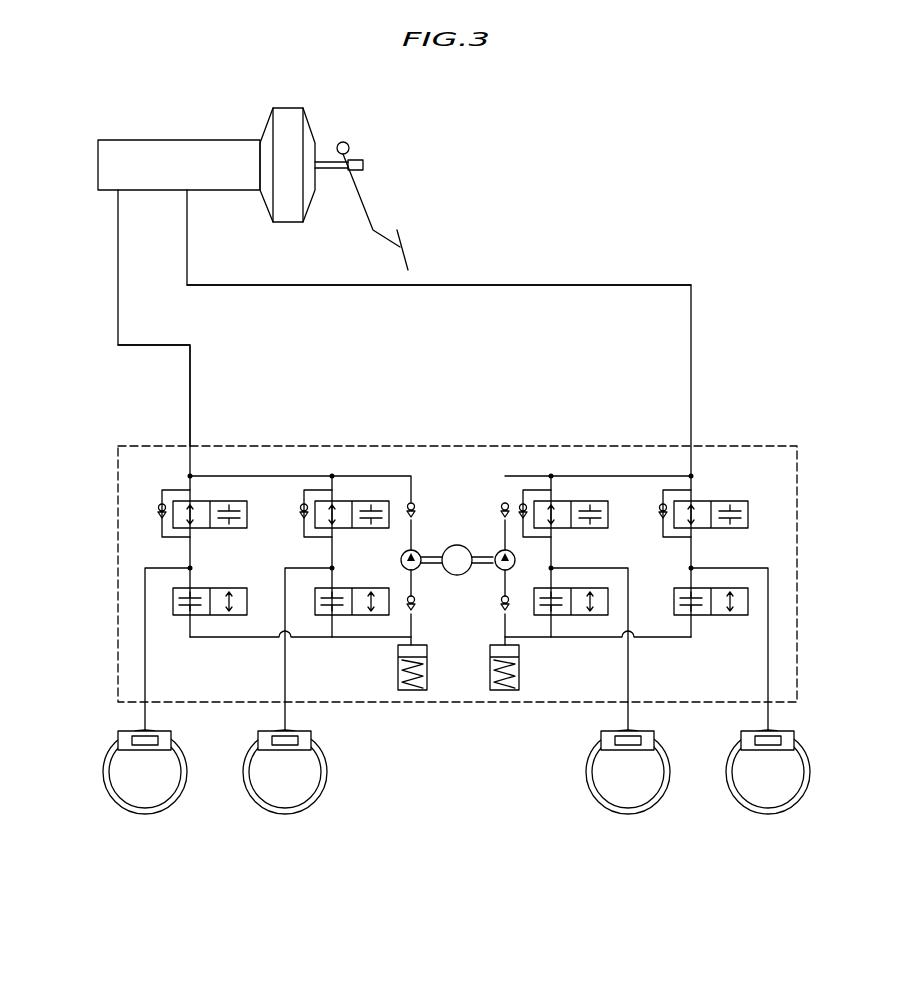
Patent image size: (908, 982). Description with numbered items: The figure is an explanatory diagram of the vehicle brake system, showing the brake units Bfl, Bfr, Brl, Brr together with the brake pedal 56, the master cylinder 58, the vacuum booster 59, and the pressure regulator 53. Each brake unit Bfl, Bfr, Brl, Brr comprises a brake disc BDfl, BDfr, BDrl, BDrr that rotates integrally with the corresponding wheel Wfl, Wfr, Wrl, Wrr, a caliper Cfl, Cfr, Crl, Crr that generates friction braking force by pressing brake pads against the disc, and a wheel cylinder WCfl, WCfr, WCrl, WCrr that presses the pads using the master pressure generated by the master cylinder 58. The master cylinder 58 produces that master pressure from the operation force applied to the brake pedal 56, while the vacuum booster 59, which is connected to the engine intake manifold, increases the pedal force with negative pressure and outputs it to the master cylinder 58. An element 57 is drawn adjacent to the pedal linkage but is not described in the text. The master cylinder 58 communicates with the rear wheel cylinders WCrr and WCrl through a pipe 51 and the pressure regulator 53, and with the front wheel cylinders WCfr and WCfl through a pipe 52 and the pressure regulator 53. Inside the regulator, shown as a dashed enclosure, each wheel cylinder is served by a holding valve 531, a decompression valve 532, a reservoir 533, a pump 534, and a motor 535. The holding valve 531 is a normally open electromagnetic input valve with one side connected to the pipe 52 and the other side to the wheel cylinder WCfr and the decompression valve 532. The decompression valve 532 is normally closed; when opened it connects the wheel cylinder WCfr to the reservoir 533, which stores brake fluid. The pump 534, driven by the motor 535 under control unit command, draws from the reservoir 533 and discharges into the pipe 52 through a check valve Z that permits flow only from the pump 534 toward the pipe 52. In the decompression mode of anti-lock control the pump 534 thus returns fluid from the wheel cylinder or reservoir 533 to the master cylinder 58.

The pipe 51 is at (529, 285).
The pipe 52 is at (190, 365).
The pressure regulator 53 is at (557, 444).
The holding valve 531 is at (212, 500).
The decompression valve 532 is at (220, 590).
The reservoir 533 is at (425, 670).
The pump 534 is at (418, 552).
The motor 535 is at (462, 547).
The brake pedal 56 is at (363, 230).
The pedal stroke sensor 57 is at (363, 165).
The master cylinder 58 is at (160, 140).
The vacuum booster 59 is at (288, 108).
The check valve Z is at (157, 513).
The brake unit Bfr is at (90, 770).
The caliper Cfr is at (120, 734).
The wheel cylinder WCfr is at (150, 736).
The brake disc BDfr is at (113, 799).
The wheel Wfr is at (157, 812).
The brake unit Bfl is at (340, 798).
The caliper Cfl is at (290, 730).
The wheel cylinder WCfl is at (310, 741).
The brake disc BDfl is at (262, 800).
The wheel Wfl is at (295, 810).
The brake unit Brr is at (574, 793).
The caliper Crr is at (602, 738).
The wheel cylinder WCrr is at (633, 733).
The brake disc BDrr is at (606, 800).
The wheel Wrr is at (637, 812).
The brake unit Brl is at (822, 769).
The caliper Crl is at (775, 731).
The wheel cylinder WCrl is at (785, 735).
The brake disc BDrl is at (748, 800).
The wheel Wrl is at (785, 812).